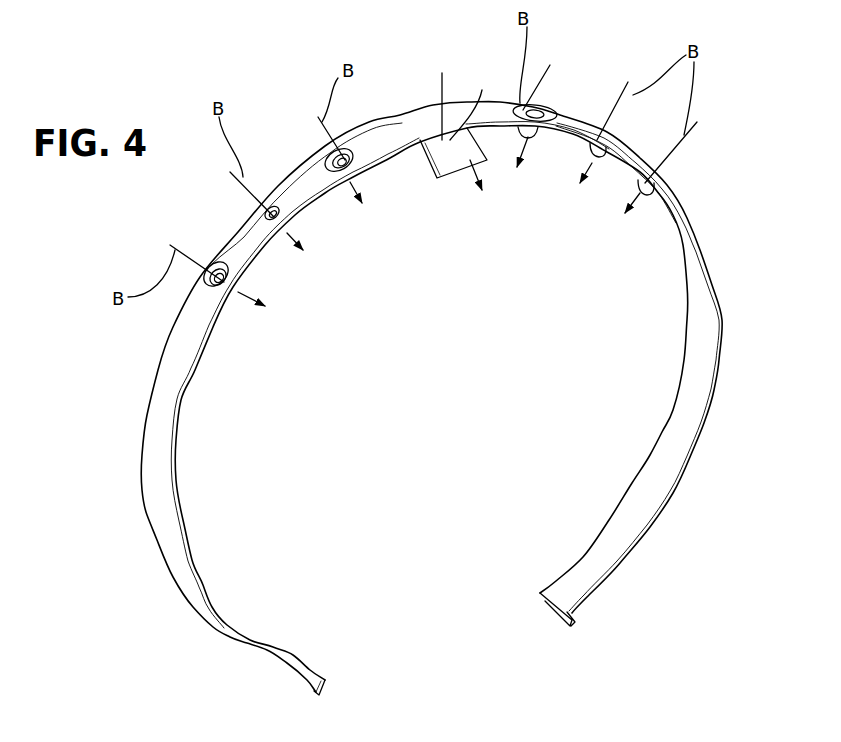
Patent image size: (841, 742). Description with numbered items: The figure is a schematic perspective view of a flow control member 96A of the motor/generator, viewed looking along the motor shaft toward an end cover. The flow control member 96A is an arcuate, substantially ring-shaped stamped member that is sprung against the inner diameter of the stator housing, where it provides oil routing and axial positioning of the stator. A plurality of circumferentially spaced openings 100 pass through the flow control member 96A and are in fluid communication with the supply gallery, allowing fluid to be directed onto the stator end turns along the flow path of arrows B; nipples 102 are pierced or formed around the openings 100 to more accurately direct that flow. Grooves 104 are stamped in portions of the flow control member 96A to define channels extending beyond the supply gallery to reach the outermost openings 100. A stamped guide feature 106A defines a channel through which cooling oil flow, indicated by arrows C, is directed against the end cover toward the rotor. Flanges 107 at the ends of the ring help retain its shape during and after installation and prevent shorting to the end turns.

The flow control member 96A is at (720, 324).
The openings 100 is at (268, 215).
The nipples 102 is at (535, 137).
The grooves 104 is at (299, 191).
The guide feature 106A is at (468, 158).
The flanges 107 is at (303, 682).